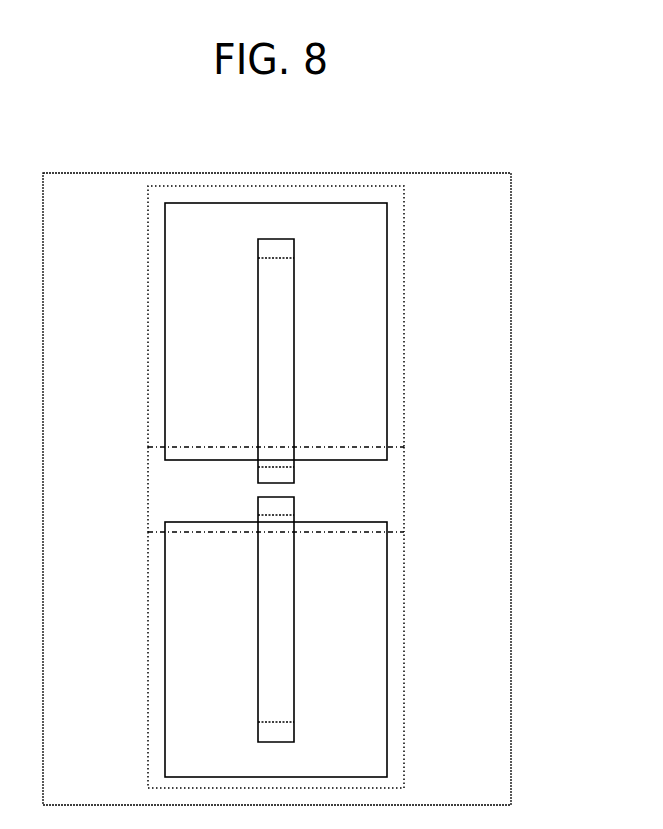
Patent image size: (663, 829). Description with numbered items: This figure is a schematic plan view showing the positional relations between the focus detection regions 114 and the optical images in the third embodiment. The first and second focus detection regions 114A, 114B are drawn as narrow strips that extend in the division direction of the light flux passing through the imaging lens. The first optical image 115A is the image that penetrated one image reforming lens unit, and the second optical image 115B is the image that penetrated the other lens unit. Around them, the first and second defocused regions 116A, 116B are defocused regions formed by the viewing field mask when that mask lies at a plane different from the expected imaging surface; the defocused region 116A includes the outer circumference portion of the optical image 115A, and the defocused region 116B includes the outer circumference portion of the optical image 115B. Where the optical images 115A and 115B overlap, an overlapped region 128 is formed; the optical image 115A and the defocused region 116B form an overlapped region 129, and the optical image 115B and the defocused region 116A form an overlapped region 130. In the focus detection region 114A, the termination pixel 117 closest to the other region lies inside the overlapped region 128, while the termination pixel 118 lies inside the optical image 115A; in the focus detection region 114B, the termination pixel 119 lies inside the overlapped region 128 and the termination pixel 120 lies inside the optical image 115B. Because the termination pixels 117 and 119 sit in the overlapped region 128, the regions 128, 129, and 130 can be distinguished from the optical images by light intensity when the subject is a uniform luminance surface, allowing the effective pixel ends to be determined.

The focus detection regions 114 is at (512, 704).
The first focus detection region 114A is at (257, 370).
The second focus detection region 114B is at (257, 598).
The first optical image 115A is at (366, 270).
The second optical image 115B is at (360, 588).
The first defocused region 116A is at (398, 364).
The second defocused region 116B is at (394, 690).
The first termination pixel 117 is at (258, 478).
The second termination pixel 118 is at (258, 250).
The termination pixel 119 is at (258, 507).
The termination pixel 120 is at (266, 731).
The overlapped region 128 is at (384, 490).
The overlapped region 129 is at (380, 447).
The overlapped region 130 is at (380, 533).